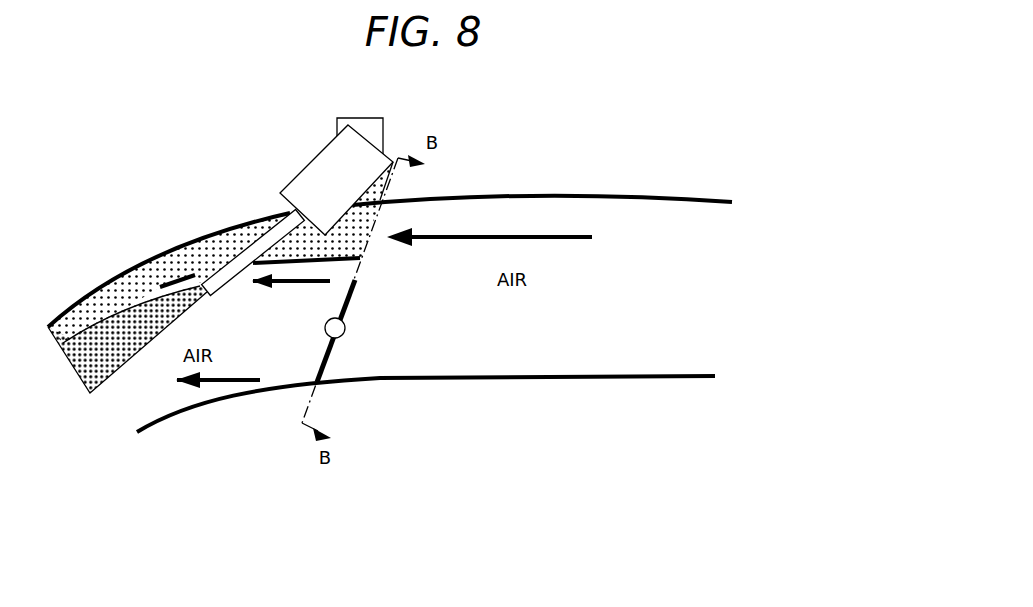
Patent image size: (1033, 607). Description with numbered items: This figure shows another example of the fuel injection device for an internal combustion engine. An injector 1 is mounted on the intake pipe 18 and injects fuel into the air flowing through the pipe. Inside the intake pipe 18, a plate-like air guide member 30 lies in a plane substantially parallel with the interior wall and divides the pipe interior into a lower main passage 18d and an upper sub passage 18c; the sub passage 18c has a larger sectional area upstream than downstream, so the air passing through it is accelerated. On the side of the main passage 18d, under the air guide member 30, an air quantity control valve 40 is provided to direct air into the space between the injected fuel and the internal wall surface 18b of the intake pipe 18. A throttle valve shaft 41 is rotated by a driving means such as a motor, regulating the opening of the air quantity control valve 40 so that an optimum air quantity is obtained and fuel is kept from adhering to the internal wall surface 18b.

The injector 1 is at (330, 168).
The intake pipe 18 is at (526, 195).
The internal wall surface 18b is at (103, 280).
The sub passage 18c is at (205, 247).
The main passage 18d is at (293, 368).
The air guide member 30 is at (270, 282).
The air quantity control valve 40 is at (330, 360).
The throttle valve shaft 41 is at (345, 328).